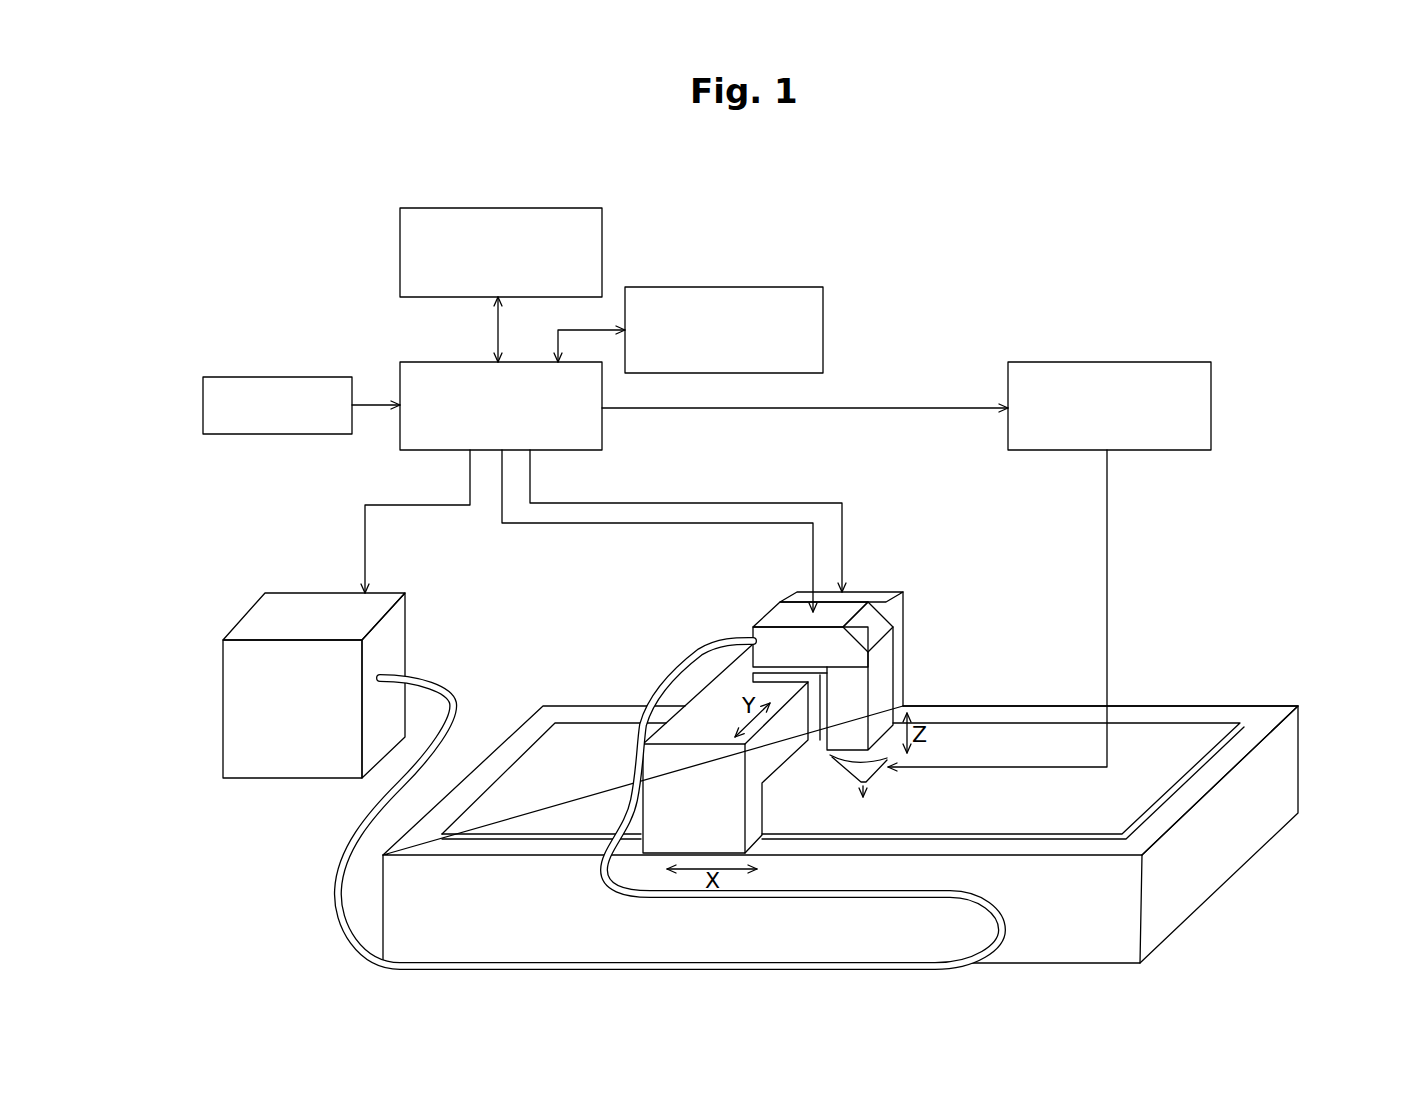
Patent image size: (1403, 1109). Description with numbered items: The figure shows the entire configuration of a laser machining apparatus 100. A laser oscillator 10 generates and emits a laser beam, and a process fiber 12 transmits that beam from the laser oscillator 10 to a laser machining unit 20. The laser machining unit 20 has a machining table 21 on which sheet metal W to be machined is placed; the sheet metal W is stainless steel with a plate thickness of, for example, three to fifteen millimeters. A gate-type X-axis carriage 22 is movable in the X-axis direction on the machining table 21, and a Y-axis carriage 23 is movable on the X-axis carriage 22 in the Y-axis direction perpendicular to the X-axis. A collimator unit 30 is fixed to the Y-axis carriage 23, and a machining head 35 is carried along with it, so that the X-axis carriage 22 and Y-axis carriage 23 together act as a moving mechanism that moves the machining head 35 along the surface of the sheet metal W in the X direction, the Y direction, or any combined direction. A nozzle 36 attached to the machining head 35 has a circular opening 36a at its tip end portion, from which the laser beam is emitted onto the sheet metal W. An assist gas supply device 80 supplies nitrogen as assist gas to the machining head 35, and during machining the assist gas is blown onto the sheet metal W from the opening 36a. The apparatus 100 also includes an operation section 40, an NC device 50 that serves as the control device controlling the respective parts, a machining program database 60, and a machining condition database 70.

The laser oscillator 10 is at (329, 603).
The process fiber 12 is at (338, 915).
The laser machining unit 20 is at (990, 705).
The machining table 21 is at (1135, 715).
The X-axis carriage 22 is at (904, 619).
The Y-axis carriage 23 is at (808, 745).
The collimator unit 30 is at (752, 619).
The machining head 35 is at (884, 685).
The nozzle 36 is at (878, 769).
The opening 36a is at (866, 783).
The operation section 40 is at (287, 377).
The NC device 50 is at (448, 362).
The machining program database 60 is at (503, 208).
The machining condition database 70 is at (728, 287).
The assist gas supply device 80 is at (1103, 362).
The laser machining apparatus 100 is at (935, 282).
The sheet metal W is at (1048, 740).